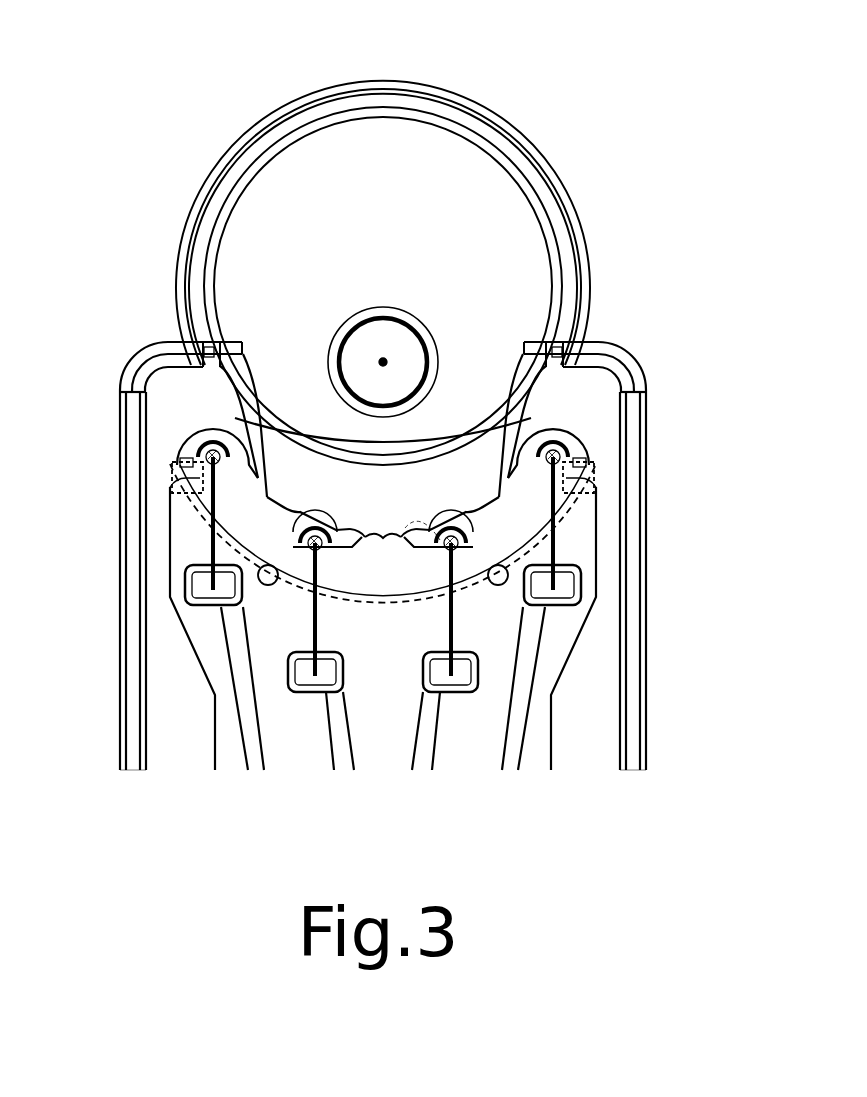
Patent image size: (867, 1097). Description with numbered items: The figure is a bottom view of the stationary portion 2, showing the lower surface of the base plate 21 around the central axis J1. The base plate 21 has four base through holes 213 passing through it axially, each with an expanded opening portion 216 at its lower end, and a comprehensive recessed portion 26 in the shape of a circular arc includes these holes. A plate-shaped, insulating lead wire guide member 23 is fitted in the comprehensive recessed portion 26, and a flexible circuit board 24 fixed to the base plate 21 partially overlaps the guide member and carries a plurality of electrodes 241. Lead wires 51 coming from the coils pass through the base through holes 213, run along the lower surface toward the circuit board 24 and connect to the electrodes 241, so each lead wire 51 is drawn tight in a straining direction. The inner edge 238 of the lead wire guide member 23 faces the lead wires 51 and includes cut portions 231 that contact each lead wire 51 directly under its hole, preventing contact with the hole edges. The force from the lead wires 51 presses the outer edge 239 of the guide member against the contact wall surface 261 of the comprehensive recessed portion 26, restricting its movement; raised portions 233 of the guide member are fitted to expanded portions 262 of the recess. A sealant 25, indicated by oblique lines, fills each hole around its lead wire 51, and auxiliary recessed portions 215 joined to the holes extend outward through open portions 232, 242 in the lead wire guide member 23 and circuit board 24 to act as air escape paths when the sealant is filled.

The stationary portion 2 is at (163, 82).
The base plate 21 is at (240, 237).
The central axis J1 is at (380, 360).
The expanded opening portion 216 is at (207, 352).
The base through hole 213 is at (168, 366).
The open portion 232 is at (218, 345).
The raised portion 233 is at (228, 362).
The inner edge 238 is at (362, 535).
The contact wall surface 261 is at (400, 525).
The lead wire guide member 23 is at (580, 478).
The comprehensive recessed portion 26 is at (585, 468).
The sealant 25 is at (205, 447).
The auxiliary recessed portion 215 is at (178, 482).
The cut portion 231 is at (208, 540).
The lead wire 51 is at (187, 587).
The expanded portion 262 is at (260, 582).
The open portion 242 is at (228, 640).
The electrode 241 is at (236, 700).
The circuit board 24 is at (540, 740).
The outer edge 239 is at (413, 603).